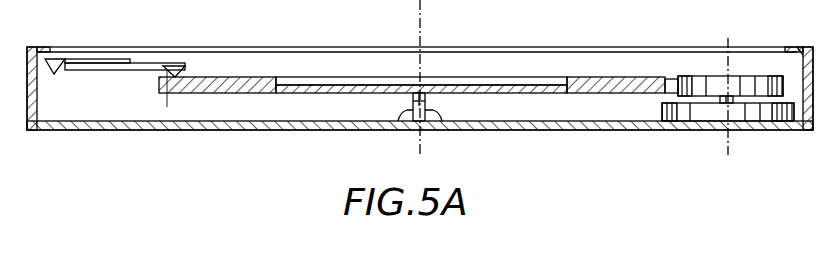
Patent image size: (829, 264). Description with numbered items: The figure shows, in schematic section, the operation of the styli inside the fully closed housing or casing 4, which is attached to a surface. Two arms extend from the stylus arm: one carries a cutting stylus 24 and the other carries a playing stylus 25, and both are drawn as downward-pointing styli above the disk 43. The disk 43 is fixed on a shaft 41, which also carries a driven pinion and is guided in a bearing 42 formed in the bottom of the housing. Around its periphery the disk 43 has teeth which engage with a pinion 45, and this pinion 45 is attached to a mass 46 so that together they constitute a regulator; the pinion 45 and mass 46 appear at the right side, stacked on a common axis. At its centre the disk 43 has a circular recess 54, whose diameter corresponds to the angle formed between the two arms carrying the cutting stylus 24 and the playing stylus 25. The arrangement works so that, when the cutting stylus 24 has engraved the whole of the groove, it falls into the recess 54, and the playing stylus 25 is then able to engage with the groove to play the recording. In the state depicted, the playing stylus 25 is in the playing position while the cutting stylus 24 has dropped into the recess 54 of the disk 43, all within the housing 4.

The housing 4 is at (170, 141).
The cutting stylus 24 is at (180, 64).
The playing stylus 25 is at (59, 58).
The shaft 41 is at (412, 99).
The bearing 42 is at (407, 112).
The disk 43 is at (605, 85).
The pinion 45 is at (717, 78).
The mass 46 is at (757, 115).
The circular recess 54 is at (512, 78).